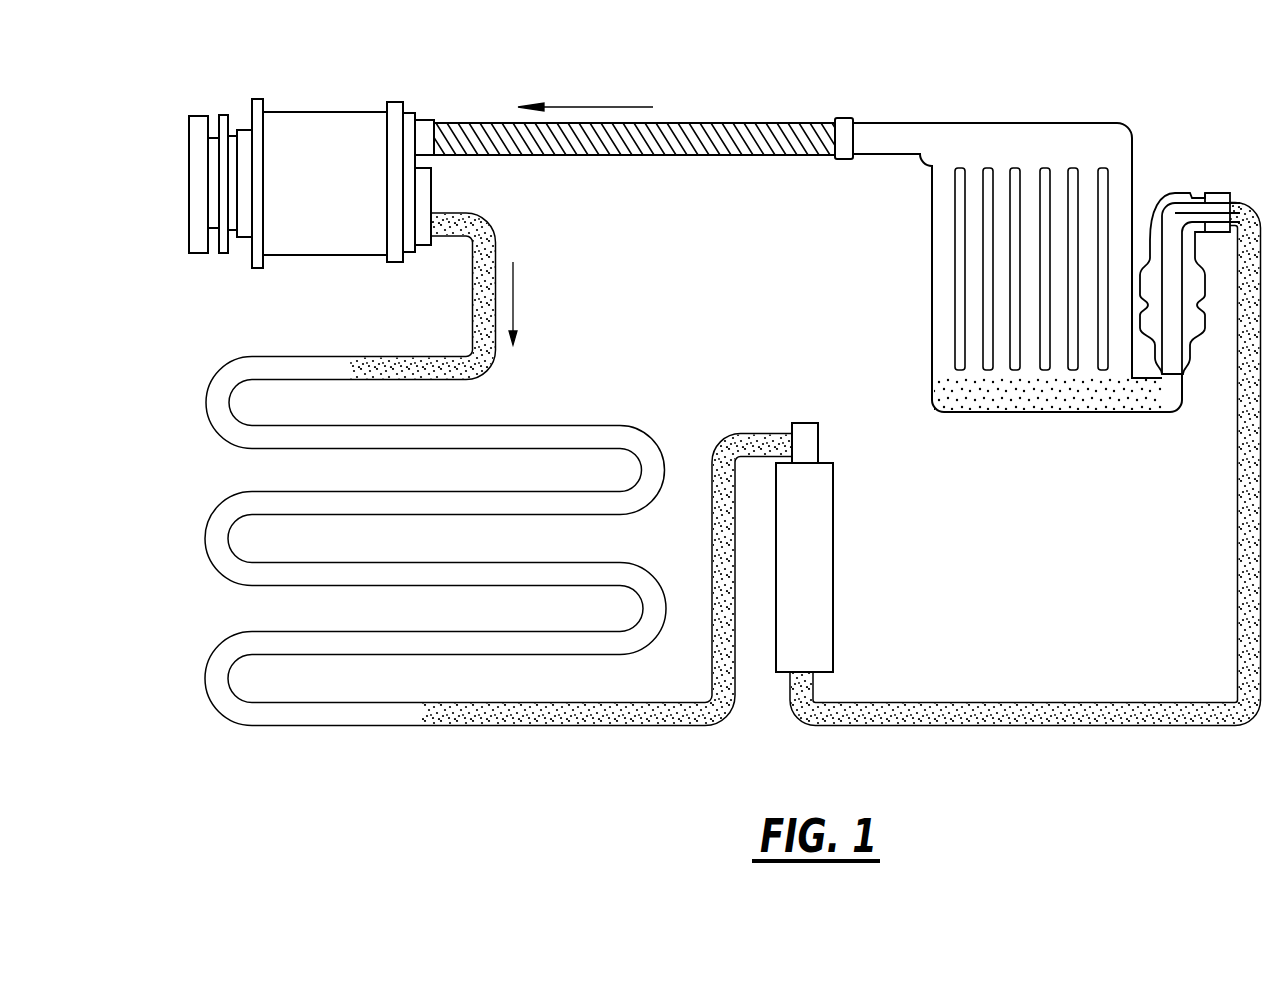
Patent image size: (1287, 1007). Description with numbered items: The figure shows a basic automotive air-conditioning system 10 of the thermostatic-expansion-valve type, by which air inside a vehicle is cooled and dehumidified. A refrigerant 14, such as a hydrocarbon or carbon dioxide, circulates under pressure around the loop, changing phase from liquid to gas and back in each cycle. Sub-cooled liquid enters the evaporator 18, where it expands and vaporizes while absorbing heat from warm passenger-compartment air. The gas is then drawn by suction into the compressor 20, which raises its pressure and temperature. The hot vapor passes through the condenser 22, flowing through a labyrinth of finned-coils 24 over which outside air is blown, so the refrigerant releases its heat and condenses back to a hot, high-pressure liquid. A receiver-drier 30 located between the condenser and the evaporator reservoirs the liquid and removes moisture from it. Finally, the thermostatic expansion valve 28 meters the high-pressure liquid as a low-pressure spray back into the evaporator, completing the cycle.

The automotive air-conditioning system 10 is at (1137, 731).
The refrigerant 14 is at (731, 123).
The evaporator 18 is at (935, 283).
The compressor 20 is at (328, 112).
The condenser 22 is at (401, 730).
The finned-coils 24 is at (620, 426).
The thermostatic expansion valve 28 is at (1190, 195).
The receiver-drier 30 is at (831, 554).